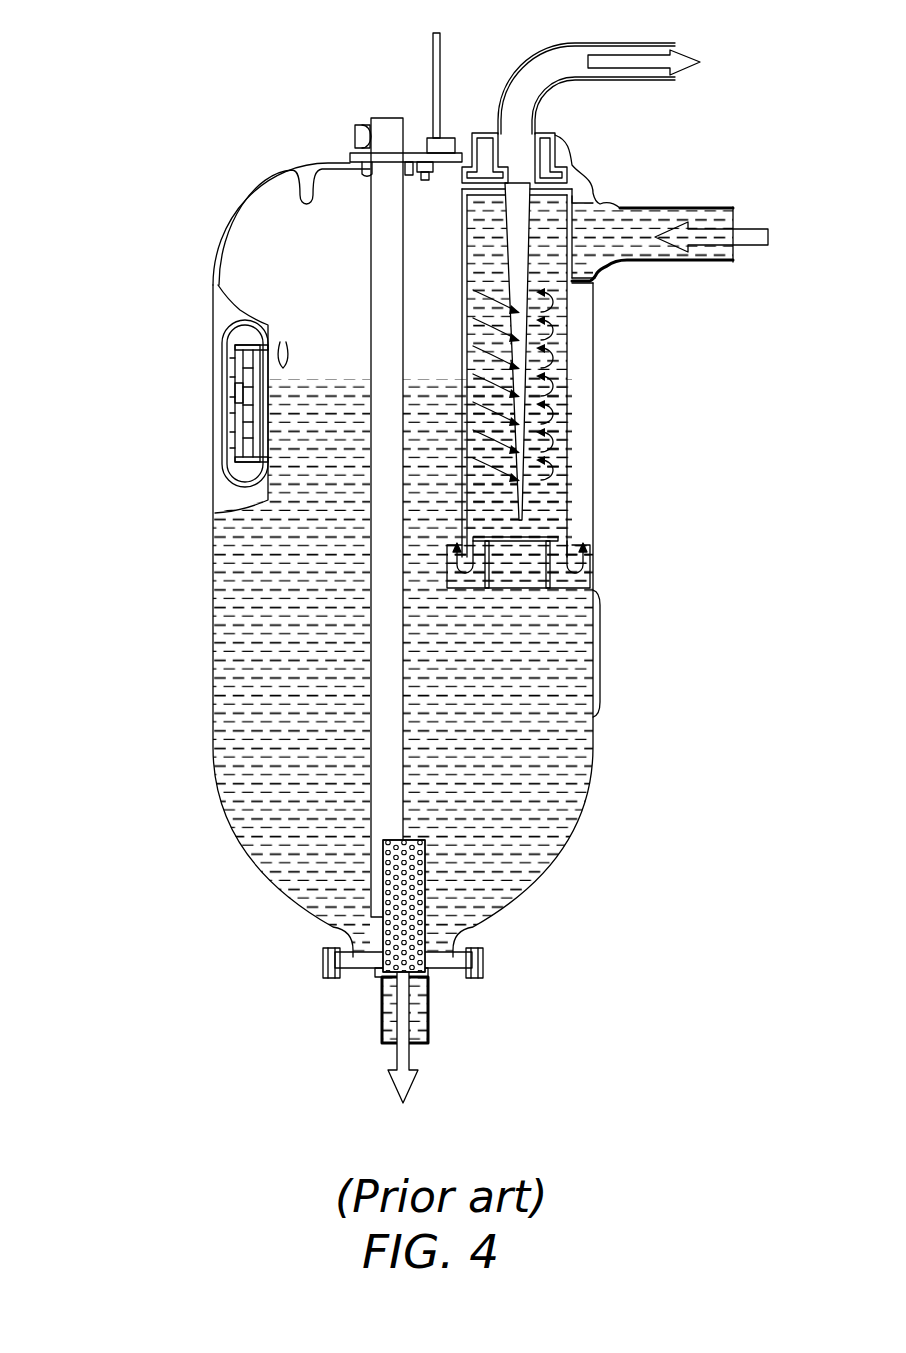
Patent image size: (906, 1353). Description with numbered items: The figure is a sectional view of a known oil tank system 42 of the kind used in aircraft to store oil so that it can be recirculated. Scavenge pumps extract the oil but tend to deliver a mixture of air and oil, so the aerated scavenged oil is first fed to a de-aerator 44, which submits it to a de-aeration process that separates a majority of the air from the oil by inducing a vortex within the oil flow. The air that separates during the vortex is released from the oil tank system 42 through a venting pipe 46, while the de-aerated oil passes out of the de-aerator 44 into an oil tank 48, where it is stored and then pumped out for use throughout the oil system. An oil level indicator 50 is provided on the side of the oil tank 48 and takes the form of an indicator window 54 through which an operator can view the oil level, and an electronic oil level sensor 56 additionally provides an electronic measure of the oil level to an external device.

The oil tank system 42 is at (155, 135).
The de-aerator 44 is at (567, 347).
The venting pipe 46 is at (552, 95).
The oil tank 48 is at (593, 667).
The oil level indicator 50 is at (198, 408).
The indicator window 54 is at (235, 368).
The electronic oil level sensor 56 is at (383, 653).